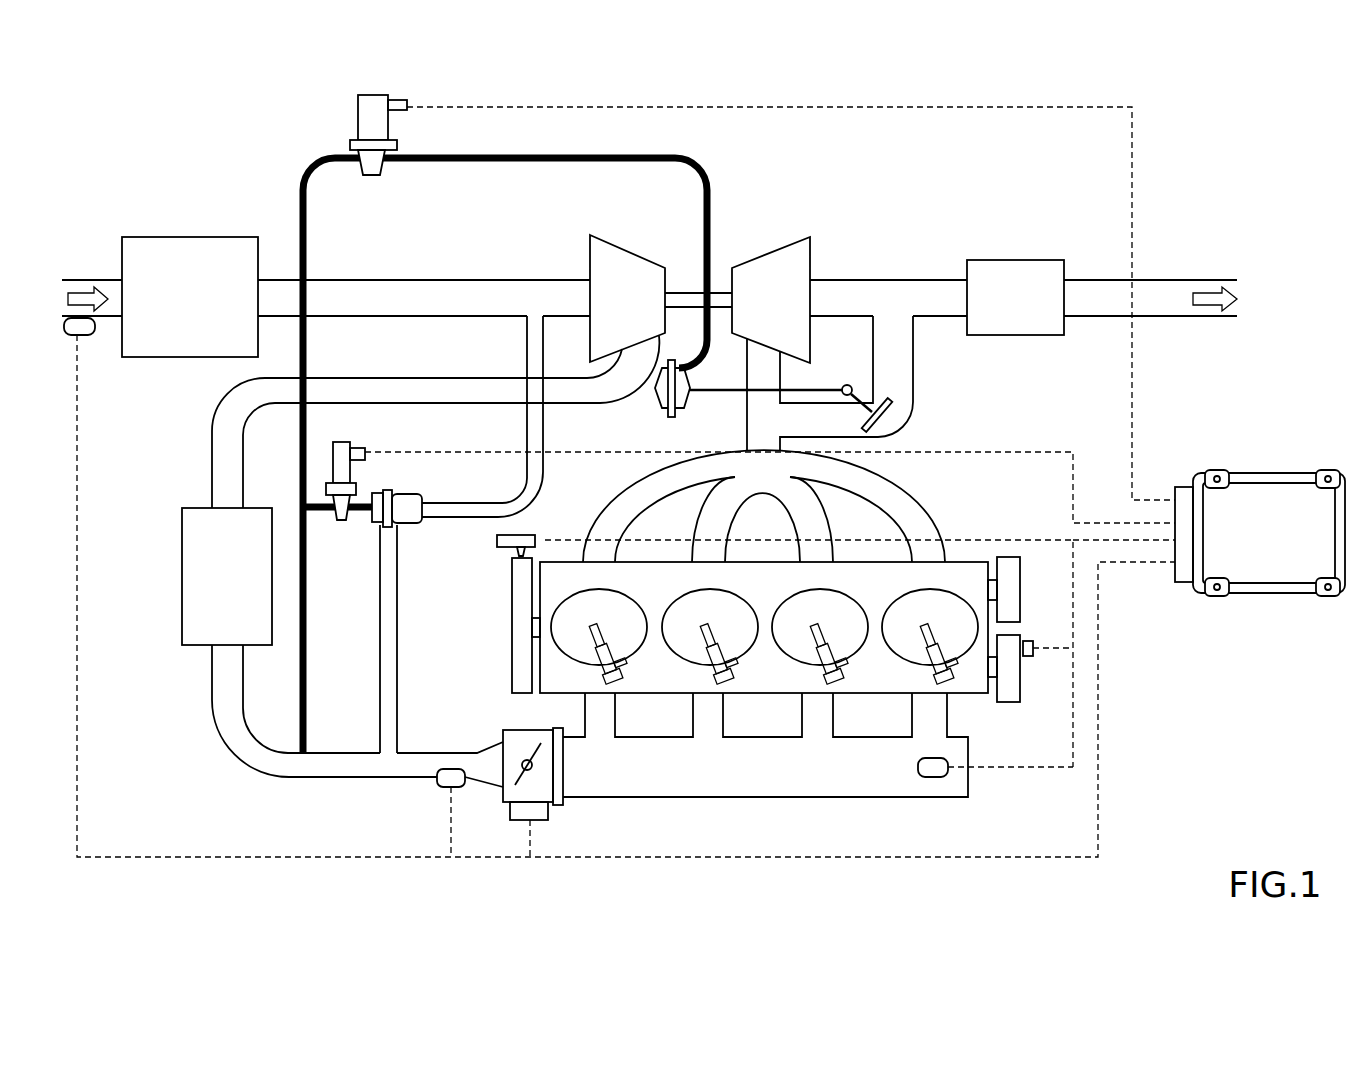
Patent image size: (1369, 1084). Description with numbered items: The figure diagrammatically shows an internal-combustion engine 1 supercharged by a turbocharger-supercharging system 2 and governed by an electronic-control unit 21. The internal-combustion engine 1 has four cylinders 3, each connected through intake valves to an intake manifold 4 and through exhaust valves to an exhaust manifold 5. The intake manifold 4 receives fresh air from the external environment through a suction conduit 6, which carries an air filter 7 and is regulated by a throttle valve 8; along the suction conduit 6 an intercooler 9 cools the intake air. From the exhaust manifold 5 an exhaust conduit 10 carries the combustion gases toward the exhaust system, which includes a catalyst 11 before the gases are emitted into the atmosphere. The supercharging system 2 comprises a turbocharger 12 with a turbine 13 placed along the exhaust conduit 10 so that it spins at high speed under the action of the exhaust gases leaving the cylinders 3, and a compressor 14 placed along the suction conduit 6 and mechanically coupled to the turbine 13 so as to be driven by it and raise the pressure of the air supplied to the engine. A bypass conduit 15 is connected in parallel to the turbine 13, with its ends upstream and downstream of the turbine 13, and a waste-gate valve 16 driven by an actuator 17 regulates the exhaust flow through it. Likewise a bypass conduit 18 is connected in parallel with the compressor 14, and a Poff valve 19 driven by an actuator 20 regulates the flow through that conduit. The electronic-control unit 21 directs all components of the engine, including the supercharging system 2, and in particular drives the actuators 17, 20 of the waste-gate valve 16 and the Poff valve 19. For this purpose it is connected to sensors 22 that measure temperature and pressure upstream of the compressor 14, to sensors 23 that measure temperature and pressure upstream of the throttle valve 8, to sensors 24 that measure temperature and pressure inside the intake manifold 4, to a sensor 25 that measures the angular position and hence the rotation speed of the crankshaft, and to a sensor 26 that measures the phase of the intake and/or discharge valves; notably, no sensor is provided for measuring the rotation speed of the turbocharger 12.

The internal-combustion engine 1 is at (149, 111).
The turbocharger-supercharging system 2 is at (508, 247).
The cylinders 3 is at (764, 636).
The intake manifold 4 is at (765, 745).
The exhaust manifold 5 is at (764, 506).
The suction conduit 6 is at (225, 470).
The air filter 7 is at (190, 297).
The throttle valve 8 is at (565, 802).
The intercooler 9 is at (227, 576).
The exhaust conduit 10 is at (940, 297).
The catalyst 11 is at (1015, 297).
The turbocharger 12 is at (698, 247).
The turbine 13 is at (745, 287).
The compressor 14 is at (607, 263).
The bypass conduit 15 is at (912, 374).
The waste-gate valve 16 is at (887, 422).
The actuator 17 is at (385, 125).
The bypass conduit 18 is at (393, 625).
The Poff valve 19 is at (405, 524).
The actuator 20 is at (350, 470).
The electronic-control unit 21 is at (1260, 533).
The sensors 22 is at (84, 338).
The sensors 23 is at (447, 790).
The sensors 24 is at (932, 778).
The sensor 25 is at (535, 537).
The sensor 26 is at (1030, 660).